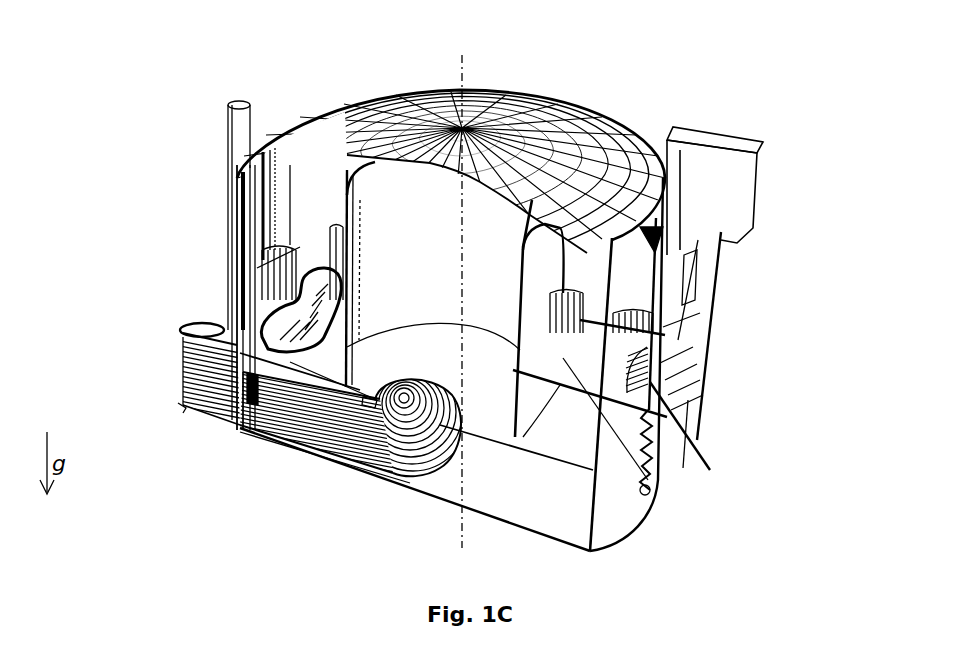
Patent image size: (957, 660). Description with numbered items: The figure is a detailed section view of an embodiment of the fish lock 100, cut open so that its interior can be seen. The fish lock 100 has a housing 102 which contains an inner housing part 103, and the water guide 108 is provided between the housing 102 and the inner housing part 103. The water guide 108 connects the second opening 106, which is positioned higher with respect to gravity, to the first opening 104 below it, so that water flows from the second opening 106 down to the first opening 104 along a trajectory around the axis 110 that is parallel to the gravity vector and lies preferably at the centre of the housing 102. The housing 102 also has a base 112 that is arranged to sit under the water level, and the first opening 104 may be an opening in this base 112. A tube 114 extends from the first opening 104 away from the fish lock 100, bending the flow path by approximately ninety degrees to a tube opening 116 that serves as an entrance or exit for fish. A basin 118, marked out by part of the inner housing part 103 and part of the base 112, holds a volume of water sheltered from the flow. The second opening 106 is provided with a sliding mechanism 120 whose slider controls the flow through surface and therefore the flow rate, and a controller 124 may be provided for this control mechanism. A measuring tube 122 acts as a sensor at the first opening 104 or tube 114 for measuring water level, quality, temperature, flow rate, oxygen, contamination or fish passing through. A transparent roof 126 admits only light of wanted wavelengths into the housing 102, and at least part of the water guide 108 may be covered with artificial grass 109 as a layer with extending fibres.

The fish lock 100 is at (103, 38).
The housing 102 is at (327, 183).
The inner housing part 103 is at (350, 163).
The first opening 104 is at (427, 410).
The second opening 106 is at (667, 420).
The water guide 108 is at (653, 483).
The artificial grass 109 is at (285, 332).
The axis 110 is at (463, 490).
The base 112 is at (373, 403).
The tube 114 is at (233, 397).
The tube opening 116 is at (187, 380).
The basin 118 is at (480, 353).
The sliding mechanism 120 is at (667, 375).
The measuring tube 122 is at (233, 128).
The controller 124 is at (707, 192).
The transparent roof 126 is at (513, 133).